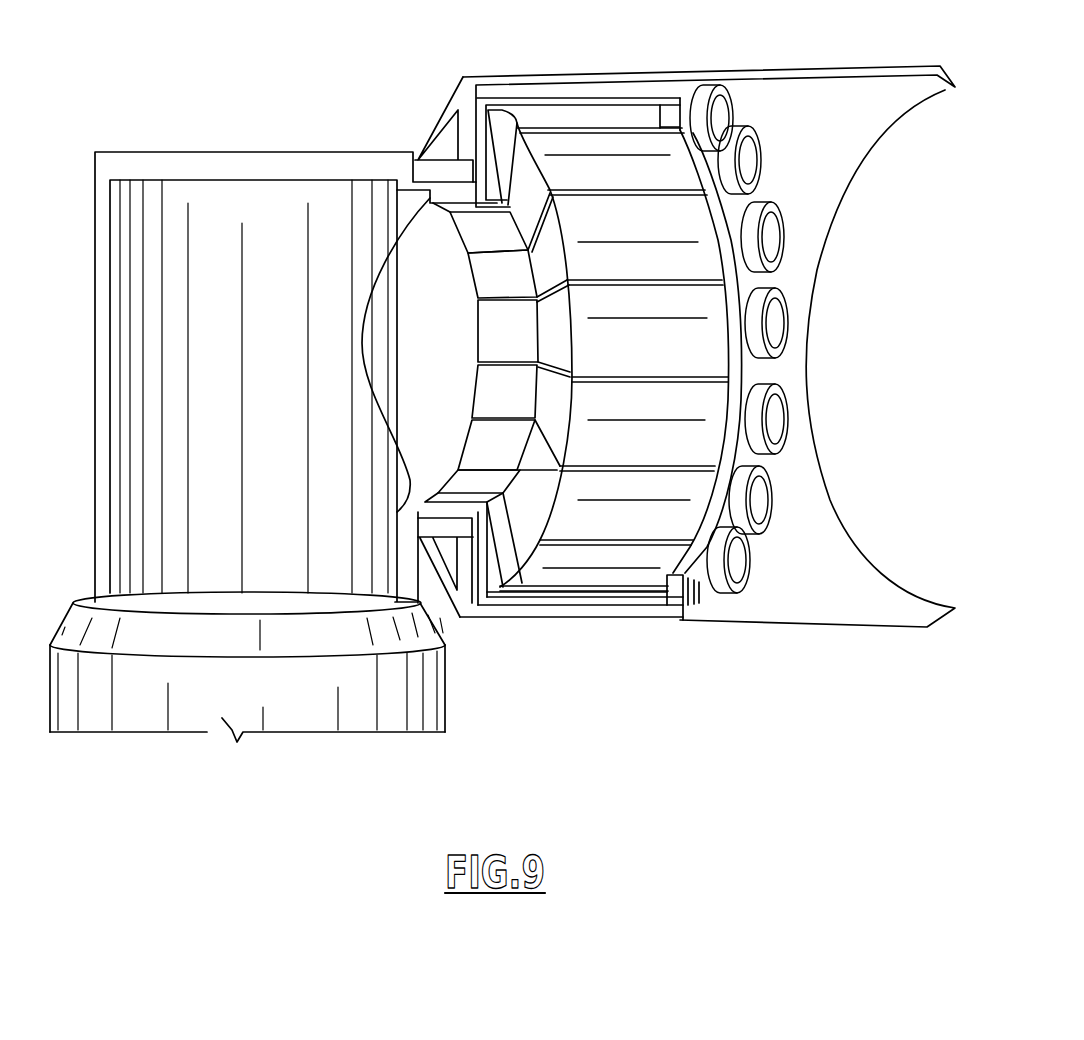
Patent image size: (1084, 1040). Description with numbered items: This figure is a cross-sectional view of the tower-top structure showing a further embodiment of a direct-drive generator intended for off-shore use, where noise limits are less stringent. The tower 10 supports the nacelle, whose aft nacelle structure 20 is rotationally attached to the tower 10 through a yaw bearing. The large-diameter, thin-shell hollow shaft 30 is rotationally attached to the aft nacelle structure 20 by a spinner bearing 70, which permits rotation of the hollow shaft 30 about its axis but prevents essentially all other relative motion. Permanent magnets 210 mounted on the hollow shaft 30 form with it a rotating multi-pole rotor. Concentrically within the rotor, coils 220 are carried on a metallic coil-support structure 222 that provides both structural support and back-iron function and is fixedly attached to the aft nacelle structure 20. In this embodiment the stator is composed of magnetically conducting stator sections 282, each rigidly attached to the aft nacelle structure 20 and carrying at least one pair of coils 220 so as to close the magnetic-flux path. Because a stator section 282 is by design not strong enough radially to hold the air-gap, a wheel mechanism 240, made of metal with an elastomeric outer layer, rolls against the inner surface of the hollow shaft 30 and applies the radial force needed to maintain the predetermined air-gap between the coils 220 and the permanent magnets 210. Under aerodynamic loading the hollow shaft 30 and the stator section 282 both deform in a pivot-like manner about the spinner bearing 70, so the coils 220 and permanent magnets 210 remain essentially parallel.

The tower 10 is at (207, 717).
The aft nacelle structure 20 is at (147, 163).
The hollow shaft 30 is at (768, 72).
The spinner bearing 70 is at (435, 167).
The permanent magnets 210 is at (522, 617).
The coils 220 is at (597, 592).
The coil-support structure 222 is at (640, 580).
The wheel mechanism 240 is at (750, 577).
The stator section 282 is at (663, 237).